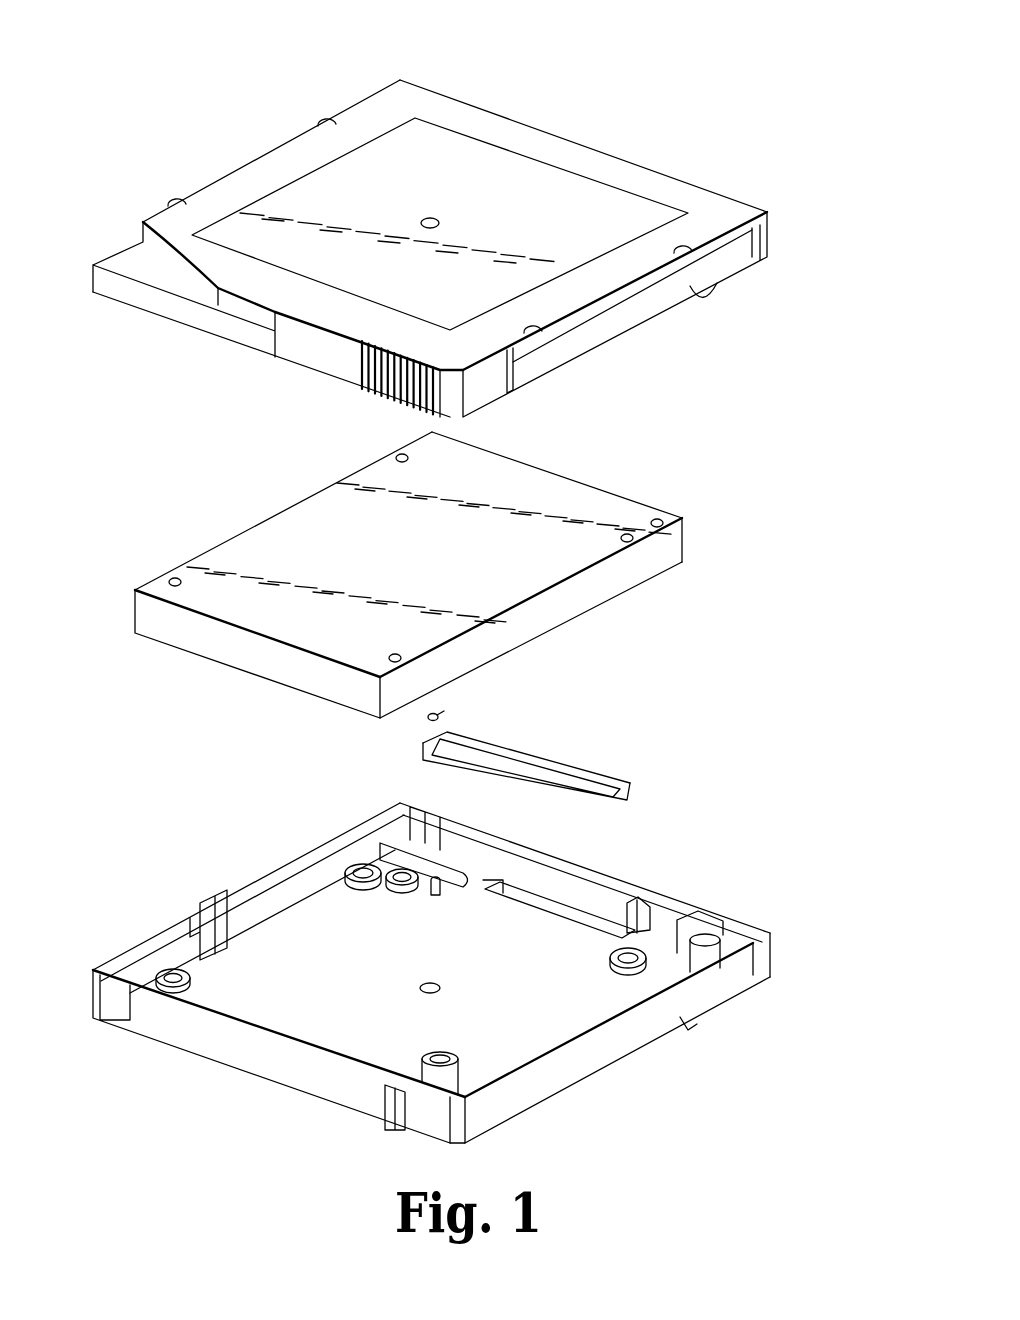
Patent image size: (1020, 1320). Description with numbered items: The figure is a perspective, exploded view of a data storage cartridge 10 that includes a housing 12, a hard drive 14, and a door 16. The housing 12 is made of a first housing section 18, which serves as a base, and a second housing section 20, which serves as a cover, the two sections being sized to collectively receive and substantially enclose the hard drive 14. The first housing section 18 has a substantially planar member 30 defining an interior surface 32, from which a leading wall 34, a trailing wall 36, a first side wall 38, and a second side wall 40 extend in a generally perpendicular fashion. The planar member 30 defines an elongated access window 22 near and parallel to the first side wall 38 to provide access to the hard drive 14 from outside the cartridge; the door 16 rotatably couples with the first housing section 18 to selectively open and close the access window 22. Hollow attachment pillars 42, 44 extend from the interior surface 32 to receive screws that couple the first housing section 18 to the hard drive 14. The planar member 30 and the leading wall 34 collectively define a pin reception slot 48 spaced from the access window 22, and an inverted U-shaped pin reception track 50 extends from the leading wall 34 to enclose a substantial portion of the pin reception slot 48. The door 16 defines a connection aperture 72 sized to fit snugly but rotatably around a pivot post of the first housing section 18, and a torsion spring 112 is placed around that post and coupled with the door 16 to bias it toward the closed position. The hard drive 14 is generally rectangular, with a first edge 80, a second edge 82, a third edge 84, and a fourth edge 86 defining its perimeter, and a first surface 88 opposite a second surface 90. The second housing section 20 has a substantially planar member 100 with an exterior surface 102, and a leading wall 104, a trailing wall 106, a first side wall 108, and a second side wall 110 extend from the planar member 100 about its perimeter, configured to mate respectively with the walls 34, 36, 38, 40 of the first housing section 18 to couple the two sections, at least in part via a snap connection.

The data storage cartridge 10 is at (681, 52).
The housing 12 is at (762, 903).
The hard drive 14 is at (686, 542).
The door 16 is at (533, 763).
The first housing section 18 is at (708, 795).
The second housing section 20 is at (572, 136).
The access window 22 is at (533, 900).
The planar member 30 is at (496, 1056).
The interior surface 32 is at (357, 1058).
The leading wall 34 is at (263, 890).
The trailing wall 36 is at (710, 990).
The first side wall 38 is at (627, 897).
The second side wall 40 is at (220, 1050).
The attachment pillar 42 is at (380, 853).
The attachment pillar 44 is at (627, 970).
The pin reception slot 48 is at (450, 875).
The pin reception track 50 is at (427, 857).
The connection aperture 72 is at (453, 743).
The first edge 80 is at (277, 516).
The second edge 82 is at (580, 480).
The third edge 84 is at (507, 637).
The fourth edge 86 is at (233, 660).
The first surface 88 is at (643, 580).
The second surface 90 is at (492, 470).
The planar member 100 is at (490, 130).
The exterior surface 102 is at (697, 213).
The leading wall 104 is at (235, 167).
The trailing wall 106 is at (620, 323).
The first side wall 108 is at (645, 163).
The second side wall 110 is at (280, 343).
The torsion spring 112 is at (427, 720).